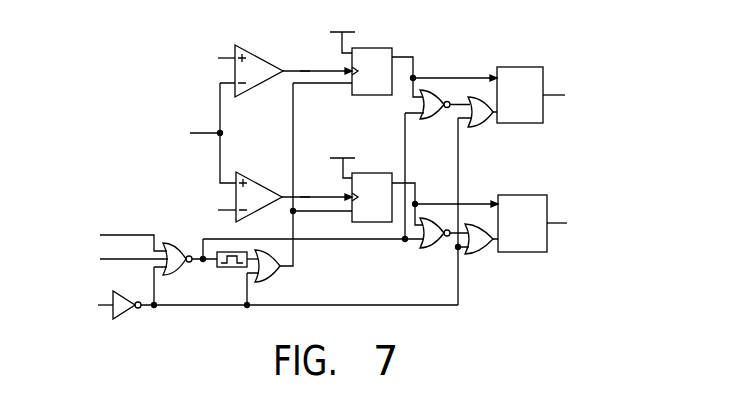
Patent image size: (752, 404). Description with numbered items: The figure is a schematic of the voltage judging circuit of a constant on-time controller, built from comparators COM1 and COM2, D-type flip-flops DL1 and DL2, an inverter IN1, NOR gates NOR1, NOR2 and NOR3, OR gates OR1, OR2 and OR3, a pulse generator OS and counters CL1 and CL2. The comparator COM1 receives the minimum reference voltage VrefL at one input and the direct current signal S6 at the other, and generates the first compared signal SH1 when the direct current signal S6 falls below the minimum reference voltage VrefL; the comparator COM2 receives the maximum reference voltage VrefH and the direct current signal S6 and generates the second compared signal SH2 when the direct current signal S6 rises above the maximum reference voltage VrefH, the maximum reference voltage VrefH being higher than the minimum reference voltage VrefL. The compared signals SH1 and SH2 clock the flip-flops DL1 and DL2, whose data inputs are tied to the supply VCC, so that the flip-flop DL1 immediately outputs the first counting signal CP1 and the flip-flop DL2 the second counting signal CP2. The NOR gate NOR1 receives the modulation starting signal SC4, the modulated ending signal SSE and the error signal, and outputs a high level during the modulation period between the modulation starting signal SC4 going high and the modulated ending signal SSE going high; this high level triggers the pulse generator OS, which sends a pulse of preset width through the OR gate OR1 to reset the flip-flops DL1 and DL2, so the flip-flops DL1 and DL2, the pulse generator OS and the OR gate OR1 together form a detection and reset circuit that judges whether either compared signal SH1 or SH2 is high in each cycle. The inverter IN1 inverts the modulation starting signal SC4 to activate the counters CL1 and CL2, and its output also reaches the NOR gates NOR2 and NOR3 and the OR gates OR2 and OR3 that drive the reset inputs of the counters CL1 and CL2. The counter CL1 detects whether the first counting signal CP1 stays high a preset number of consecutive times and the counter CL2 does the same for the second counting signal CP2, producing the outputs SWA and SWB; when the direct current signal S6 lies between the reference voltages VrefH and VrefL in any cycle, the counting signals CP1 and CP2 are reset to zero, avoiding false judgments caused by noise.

The comparator COM1 is at (262, 58).
The comparator COM2 is at (262, 186).
The D-type flip-flop DL1 is at (372, 48).
The D-type flip-flop DL2 is at (372, 173).
The counter CL1 is at (522, 67).
The counter CL2 is at (525, 195).
The NOR gate NOR1 is at (178, 275).
The NOR gate NOR2 is at (438, 119).
The NOR gate NOR3 is at (438, 248).
The OR gate OR1 is at (272, 282).
The OR gate OR2 is at (484, 127).
The OR gate OR3 is at (484, 254).
The pulse generator OS is at (225, 267).
The inverter IN1 is at (130, 313).
The minimum reference voltage VrefL is at (201, 58).
The maximum reference voltage VrefH is at (201, 210).
The direct current signal S6 is at (201, 133).
The first compared signal SH1 is at (318, 62).
The second compared signal SH2 is at (319, 188).
The supply voltage VCC is at (344, 35).
The first counting signal CP1 is at (444, 77).
The second counting signal CP2 is at (445, 204).
The switch control signal A SWA is at (572, 95).
The switch control signal B SWB is at (575, 223).
The modulated ending signal SSE is at (115, 259).
The modulation starting signal SC4 is at (91, 305).